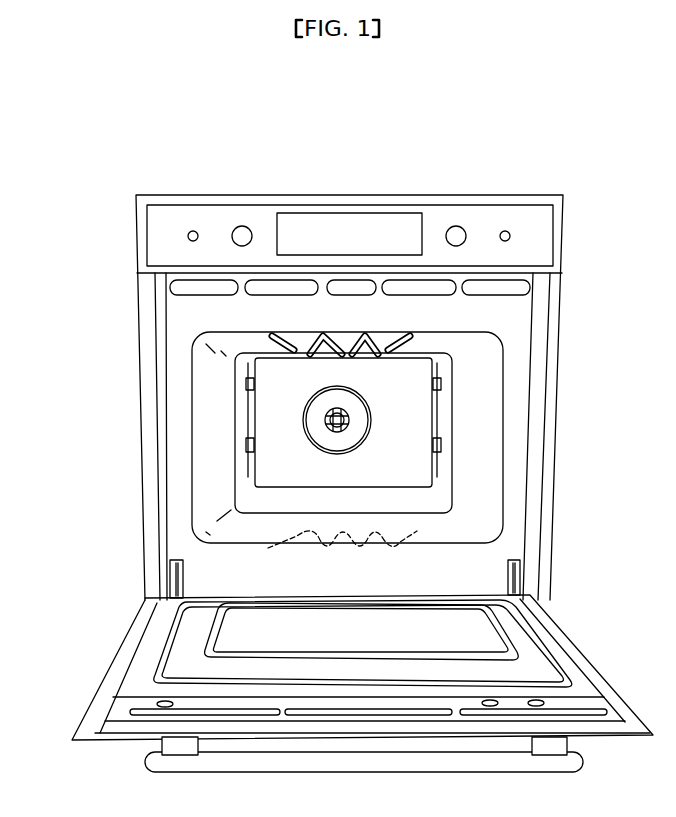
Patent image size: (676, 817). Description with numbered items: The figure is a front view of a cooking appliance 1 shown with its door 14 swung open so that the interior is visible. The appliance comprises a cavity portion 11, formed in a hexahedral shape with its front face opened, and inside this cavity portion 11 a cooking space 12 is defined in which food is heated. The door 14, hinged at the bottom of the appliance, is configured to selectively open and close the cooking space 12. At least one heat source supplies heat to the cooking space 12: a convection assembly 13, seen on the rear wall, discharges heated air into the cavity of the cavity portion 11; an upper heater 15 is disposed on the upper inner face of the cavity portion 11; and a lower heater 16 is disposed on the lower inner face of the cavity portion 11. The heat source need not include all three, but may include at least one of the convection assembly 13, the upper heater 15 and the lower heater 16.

The cooking appliance 1 is at (97, 166).
The cavity portion 11 is at (200, 355).
The cooking space 12 is at (228, 341).
The convection assembly 13 is at (302, 423).
The door 14 is at (111, 668).
The upper heater 15 is at (420, 338).
The lower heater 16 is at (425, 537).